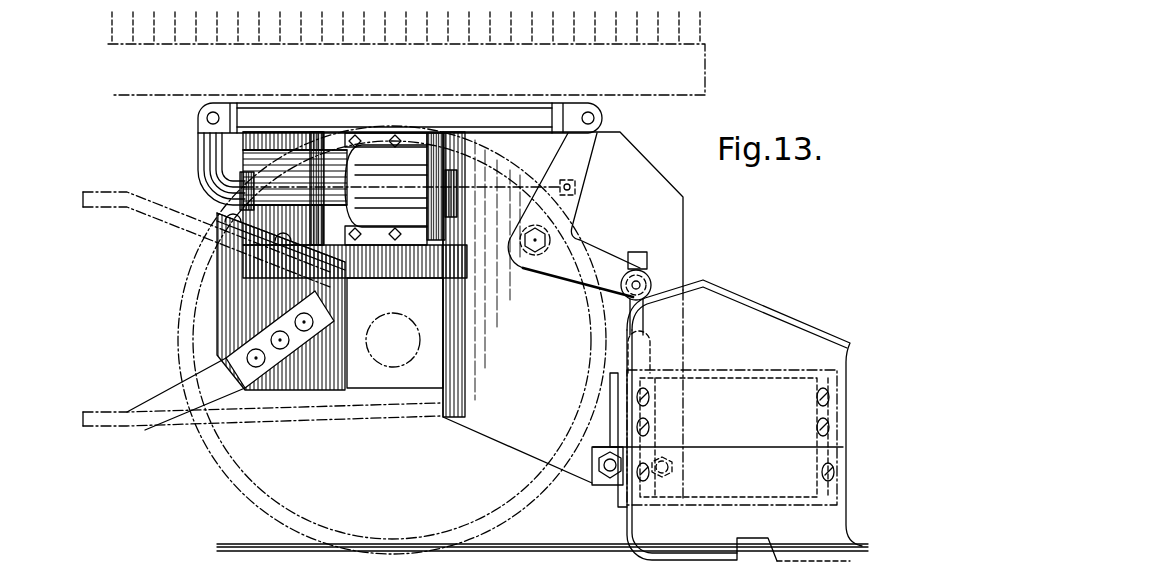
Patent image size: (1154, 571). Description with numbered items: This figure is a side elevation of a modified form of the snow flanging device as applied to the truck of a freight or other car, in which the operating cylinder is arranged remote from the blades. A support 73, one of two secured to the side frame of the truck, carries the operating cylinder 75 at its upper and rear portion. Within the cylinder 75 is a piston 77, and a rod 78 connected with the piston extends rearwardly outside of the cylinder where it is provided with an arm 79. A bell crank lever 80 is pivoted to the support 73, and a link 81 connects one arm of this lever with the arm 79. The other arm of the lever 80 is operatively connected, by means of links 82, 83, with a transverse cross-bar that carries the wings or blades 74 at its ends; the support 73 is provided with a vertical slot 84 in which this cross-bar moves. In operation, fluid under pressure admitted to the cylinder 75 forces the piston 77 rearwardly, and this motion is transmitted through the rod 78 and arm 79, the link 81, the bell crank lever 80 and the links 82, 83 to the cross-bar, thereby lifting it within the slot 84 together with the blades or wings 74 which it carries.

The support 73 is at (660, 182).
The wing or blade 74 is at (809, 324).
The operating cylinder 75 is at (413, 243).
The piston 77 is at (403, 165).
The rod 78 is at (392, 197).
The arm 79 is at (200, 163).
The bell crank lever 80 is at (574, 215).
The link 81 is at (463, 112).
The link 82 is at (630, 298).
The link 83 is at (618, 366).
The vertical slot 84 is at (645, 267).